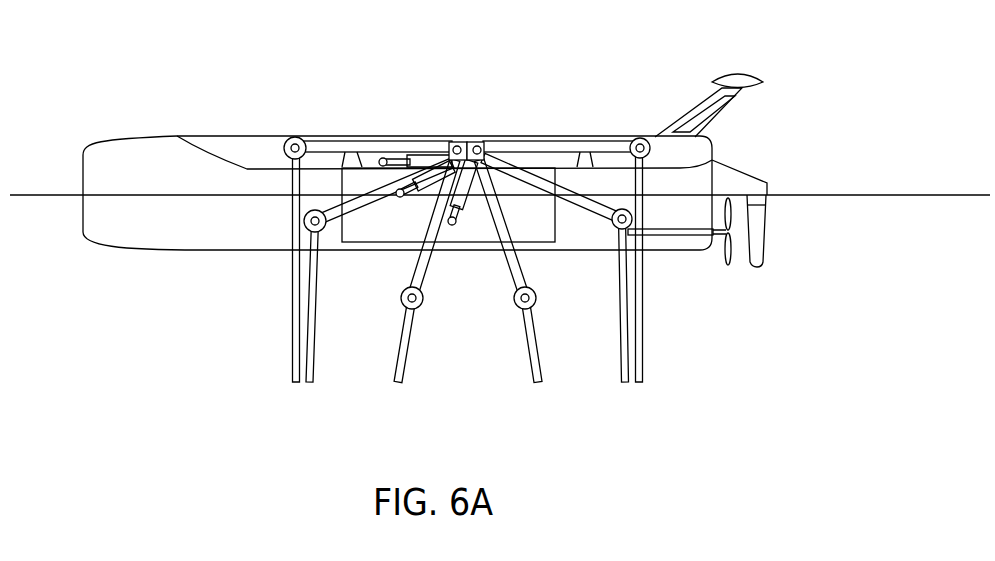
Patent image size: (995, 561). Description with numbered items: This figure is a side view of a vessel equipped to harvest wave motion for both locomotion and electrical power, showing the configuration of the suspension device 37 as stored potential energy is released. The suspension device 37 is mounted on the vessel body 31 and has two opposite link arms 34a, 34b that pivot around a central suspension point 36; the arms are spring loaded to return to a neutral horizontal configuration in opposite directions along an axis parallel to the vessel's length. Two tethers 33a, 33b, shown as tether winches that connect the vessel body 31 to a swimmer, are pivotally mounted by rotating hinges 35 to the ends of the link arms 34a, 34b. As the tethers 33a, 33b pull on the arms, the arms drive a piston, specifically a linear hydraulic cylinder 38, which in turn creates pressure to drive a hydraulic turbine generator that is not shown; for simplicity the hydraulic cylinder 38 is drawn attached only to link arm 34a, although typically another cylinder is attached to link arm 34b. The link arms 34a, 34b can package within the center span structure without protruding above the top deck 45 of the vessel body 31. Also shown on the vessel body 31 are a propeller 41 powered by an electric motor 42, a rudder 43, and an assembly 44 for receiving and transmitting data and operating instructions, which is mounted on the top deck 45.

The vessel body 31 is at (127, 237).
The tether 33a is at (286, 390).
The tether 33b is at (528, 390).
The link arm 34a is at (362, 138).
The link arm 34b is at (565, 138).
The rotating hinge 35 is at (296, 136).
The central suspension point 36 is at (466, 124).
The suspension device 37 is at (467, 89).
The linear hydraulic cylinder 38 is at (458, 228).
The propeller 41 is at (728, 268).
The electric motor 42 is at (691, 236).
The rudder 43 is at (757, 268).
The assembly for receiving and transmitting data and operating instructions 44 is at (738, 73).
The top deck 45 is at (198, 137).